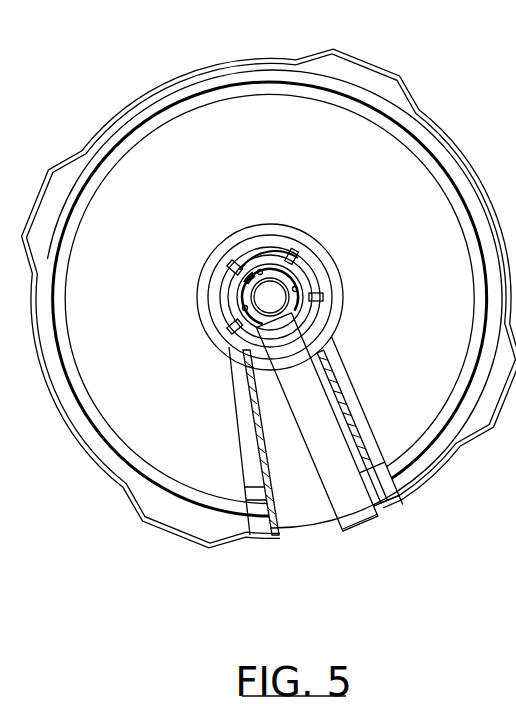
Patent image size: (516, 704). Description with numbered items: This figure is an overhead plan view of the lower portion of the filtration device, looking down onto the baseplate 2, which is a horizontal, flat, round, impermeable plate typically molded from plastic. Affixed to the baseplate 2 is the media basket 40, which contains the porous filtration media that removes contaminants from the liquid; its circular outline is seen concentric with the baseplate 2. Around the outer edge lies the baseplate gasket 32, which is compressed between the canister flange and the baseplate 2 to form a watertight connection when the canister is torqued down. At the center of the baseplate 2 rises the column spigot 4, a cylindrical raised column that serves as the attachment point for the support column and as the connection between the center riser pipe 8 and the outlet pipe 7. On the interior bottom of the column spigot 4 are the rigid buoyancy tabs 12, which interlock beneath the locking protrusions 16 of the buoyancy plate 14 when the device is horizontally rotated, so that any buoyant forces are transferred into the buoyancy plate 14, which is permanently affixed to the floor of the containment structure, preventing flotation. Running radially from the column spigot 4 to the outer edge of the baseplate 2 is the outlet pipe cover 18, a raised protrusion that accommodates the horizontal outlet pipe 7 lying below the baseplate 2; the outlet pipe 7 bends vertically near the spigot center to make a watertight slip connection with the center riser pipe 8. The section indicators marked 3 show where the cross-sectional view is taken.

The baseplate 2 is at (121, 499).
The section line 3- 3 is at (173, 65).
The column spigot 4 is at (344, 288).
The outlet pipe 7 is at (358, 525).
The center riser pipe 8 is at (250, 281).
The buoyancy tabs 12 is at (287, 254).
The buoyancy plate 14 is at (258, 262).
The locking protrusions 16 is at (230, 332).
The outlet pipe cover 18 is at (342, 375).
The baseplate gasket 32 is at (443, 157).
The media basket 40 is at (66, 303).